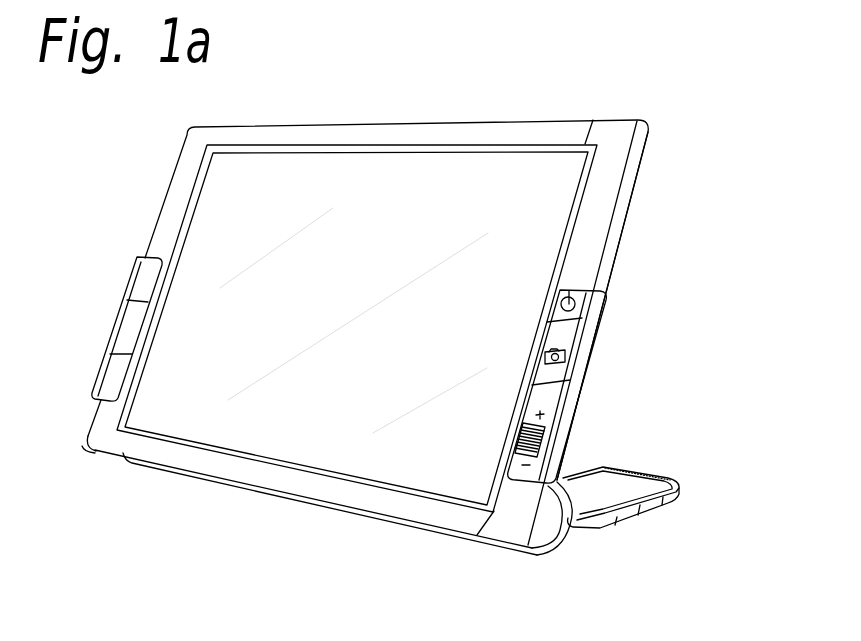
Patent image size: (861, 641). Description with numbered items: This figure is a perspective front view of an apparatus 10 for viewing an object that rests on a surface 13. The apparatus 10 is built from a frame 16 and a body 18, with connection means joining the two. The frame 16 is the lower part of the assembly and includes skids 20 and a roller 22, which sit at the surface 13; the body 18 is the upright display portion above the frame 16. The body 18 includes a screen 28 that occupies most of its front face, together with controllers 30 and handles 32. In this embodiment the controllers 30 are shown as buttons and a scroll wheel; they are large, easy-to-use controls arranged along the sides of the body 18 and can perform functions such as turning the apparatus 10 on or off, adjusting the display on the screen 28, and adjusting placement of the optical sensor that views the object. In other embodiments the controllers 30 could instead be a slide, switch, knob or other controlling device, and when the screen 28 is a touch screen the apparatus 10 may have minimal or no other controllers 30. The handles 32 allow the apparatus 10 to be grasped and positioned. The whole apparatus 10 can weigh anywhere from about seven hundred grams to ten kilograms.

The apparatus 10 is at (135, 165).
The surface 13 is at (542, 563).
The frame 16 is at (695, 410).
The body 18 is at (148, 212).
The skids 20 is at (660, 518).
The roller 22 is at (443, 548).
The screen 28 is at (498, 176).
The controllers 30 is at (142, 284).
The handles 32 is at (585, 379).